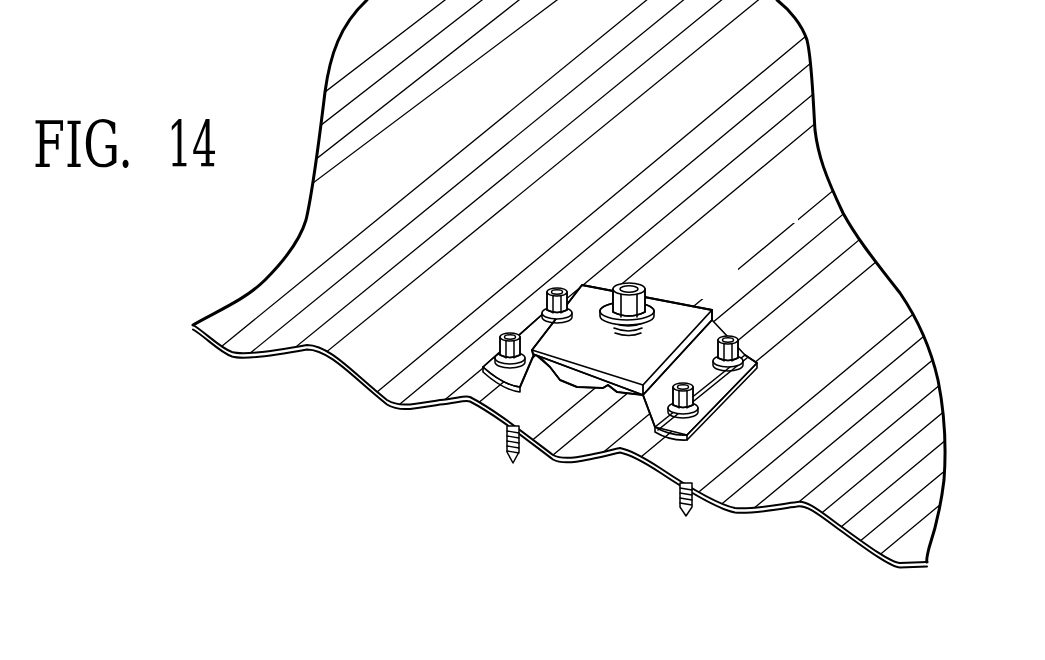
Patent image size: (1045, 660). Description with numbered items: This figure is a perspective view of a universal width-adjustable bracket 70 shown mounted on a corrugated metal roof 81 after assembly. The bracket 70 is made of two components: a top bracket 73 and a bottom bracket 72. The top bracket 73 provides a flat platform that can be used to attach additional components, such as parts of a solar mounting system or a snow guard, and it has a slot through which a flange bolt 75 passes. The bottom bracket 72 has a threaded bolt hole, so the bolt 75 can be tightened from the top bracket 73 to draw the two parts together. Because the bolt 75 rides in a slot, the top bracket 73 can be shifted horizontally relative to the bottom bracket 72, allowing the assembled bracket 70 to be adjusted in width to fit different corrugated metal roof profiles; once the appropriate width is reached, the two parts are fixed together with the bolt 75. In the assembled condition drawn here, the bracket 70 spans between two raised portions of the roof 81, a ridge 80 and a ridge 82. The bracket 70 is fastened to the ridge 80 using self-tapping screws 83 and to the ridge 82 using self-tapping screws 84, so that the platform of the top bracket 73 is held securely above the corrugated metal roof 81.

The universal width-adjustable bracket 70 is at (719, 232).
The bottom bracket 72 is at (584, 390).
The top bracket 73 is at (680, 303).
The bolt 75 is at (628, 282).
The ridge 80 is at (470, 408).
The corrugated metal roof 81 is at (380, 412).
The ridge 82 is at (637, 458).
The self-tapping screws 83 is at (552, 292).
The self-tapping screws 84 is at (748, 382).